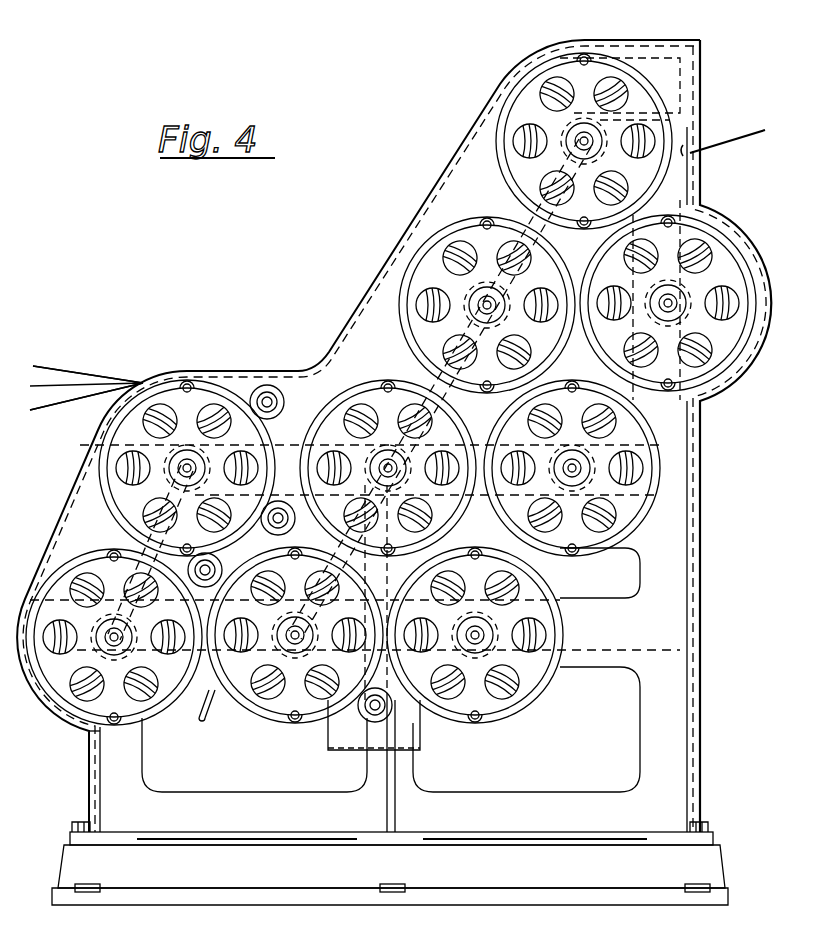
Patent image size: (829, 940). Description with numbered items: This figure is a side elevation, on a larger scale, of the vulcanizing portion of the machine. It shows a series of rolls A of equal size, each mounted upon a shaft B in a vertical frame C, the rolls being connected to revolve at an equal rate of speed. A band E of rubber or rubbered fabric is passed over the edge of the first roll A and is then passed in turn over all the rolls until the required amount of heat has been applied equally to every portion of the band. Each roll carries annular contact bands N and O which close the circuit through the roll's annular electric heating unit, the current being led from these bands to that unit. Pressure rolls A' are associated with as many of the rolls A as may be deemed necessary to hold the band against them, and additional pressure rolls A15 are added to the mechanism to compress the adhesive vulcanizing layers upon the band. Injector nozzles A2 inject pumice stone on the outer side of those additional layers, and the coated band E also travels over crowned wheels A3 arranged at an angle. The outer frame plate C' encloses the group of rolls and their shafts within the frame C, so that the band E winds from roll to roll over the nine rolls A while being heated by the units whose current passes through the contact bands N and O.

The roll A is at (395, 402).
The shaft B is at (588, 146).
The annular contact band N is at (548, 96).
The annular contact band O is at (64, 718).
The pressure roll A' is at (290, 611).
The injector nozzle A2 is at (200, 716).
The crowned wheel A3 is at (86, 391).
The pressure roll A15 is at (284, 402).
The vertical frame C is at (91, 779).
The frame plate C' is at (394, 436).
The band E is at (75, 388).